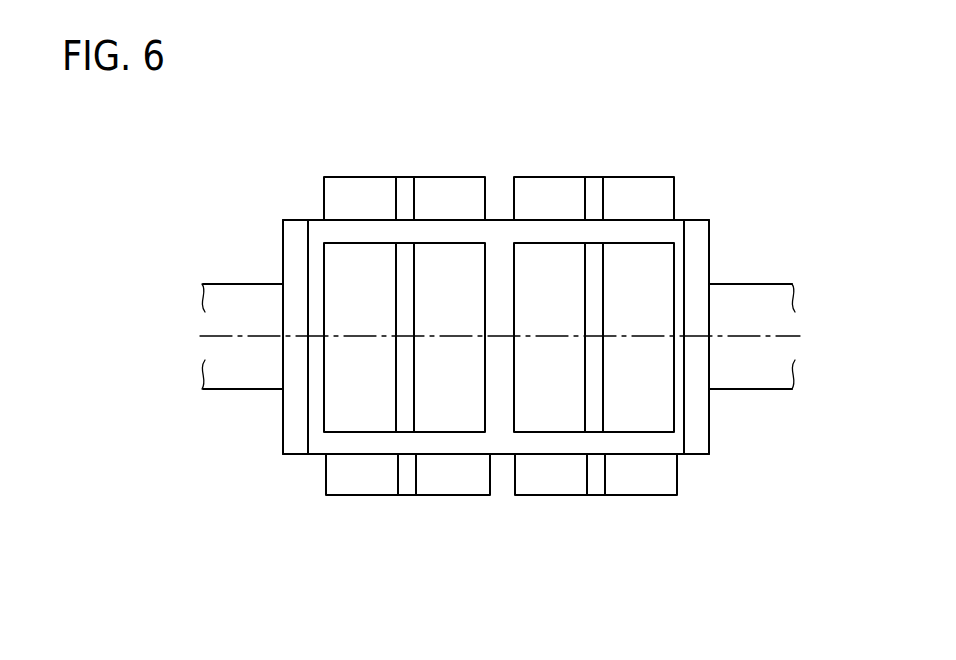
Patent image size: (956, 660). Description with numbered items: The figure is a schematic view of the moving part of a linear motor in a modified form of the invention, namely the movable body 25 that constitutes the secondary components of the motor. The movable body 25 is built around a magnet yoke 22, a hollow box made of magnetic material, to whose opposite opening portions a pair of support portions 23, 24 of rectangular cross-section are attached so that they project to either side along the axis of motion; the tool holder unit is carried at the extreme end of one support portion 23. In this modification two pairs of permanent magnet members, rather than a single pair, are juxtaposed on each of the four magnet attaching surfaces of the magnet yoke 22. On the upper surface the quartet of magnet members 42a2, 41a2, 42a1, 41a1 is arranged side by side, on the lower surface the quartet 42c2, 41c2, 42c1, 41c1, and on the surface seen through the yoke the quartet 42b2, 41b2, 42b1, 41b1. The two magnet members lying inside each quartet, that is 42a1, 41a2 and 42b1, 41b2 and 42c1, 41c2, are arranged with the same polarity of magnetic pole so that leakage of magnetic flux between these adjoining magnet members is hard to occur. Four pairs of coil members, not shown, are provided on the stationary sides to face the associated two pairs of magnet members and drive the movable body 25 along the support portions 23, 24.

The magnet yoke 22 is at (650, 233).
The support portion 23 is at (745, 300).
The support portion 24 is at (225, 294).
The movable body 25 is at (283, 190).
The magnet member 41a1 is at (648, 189).
The magnet member 41a2 is at (427, 186).
The magnet member 41b1 is at (660, 402).
The magnet member 41b2 is at (438, 420).
The magnet member 41c1 is at (655, 476).
The magnet member 41c2 is at (468, 486).
The magnet member 42a1 is at (532, 188).
The magnet member 42a2 is at (337, 184).
The magnet member 42b1 is at (562, 418).
The magnet member 42b2 is at (338, 413).
The magnet member 42c1 is at (530, 486).
The magnet member 42c2 is at (343, 487).